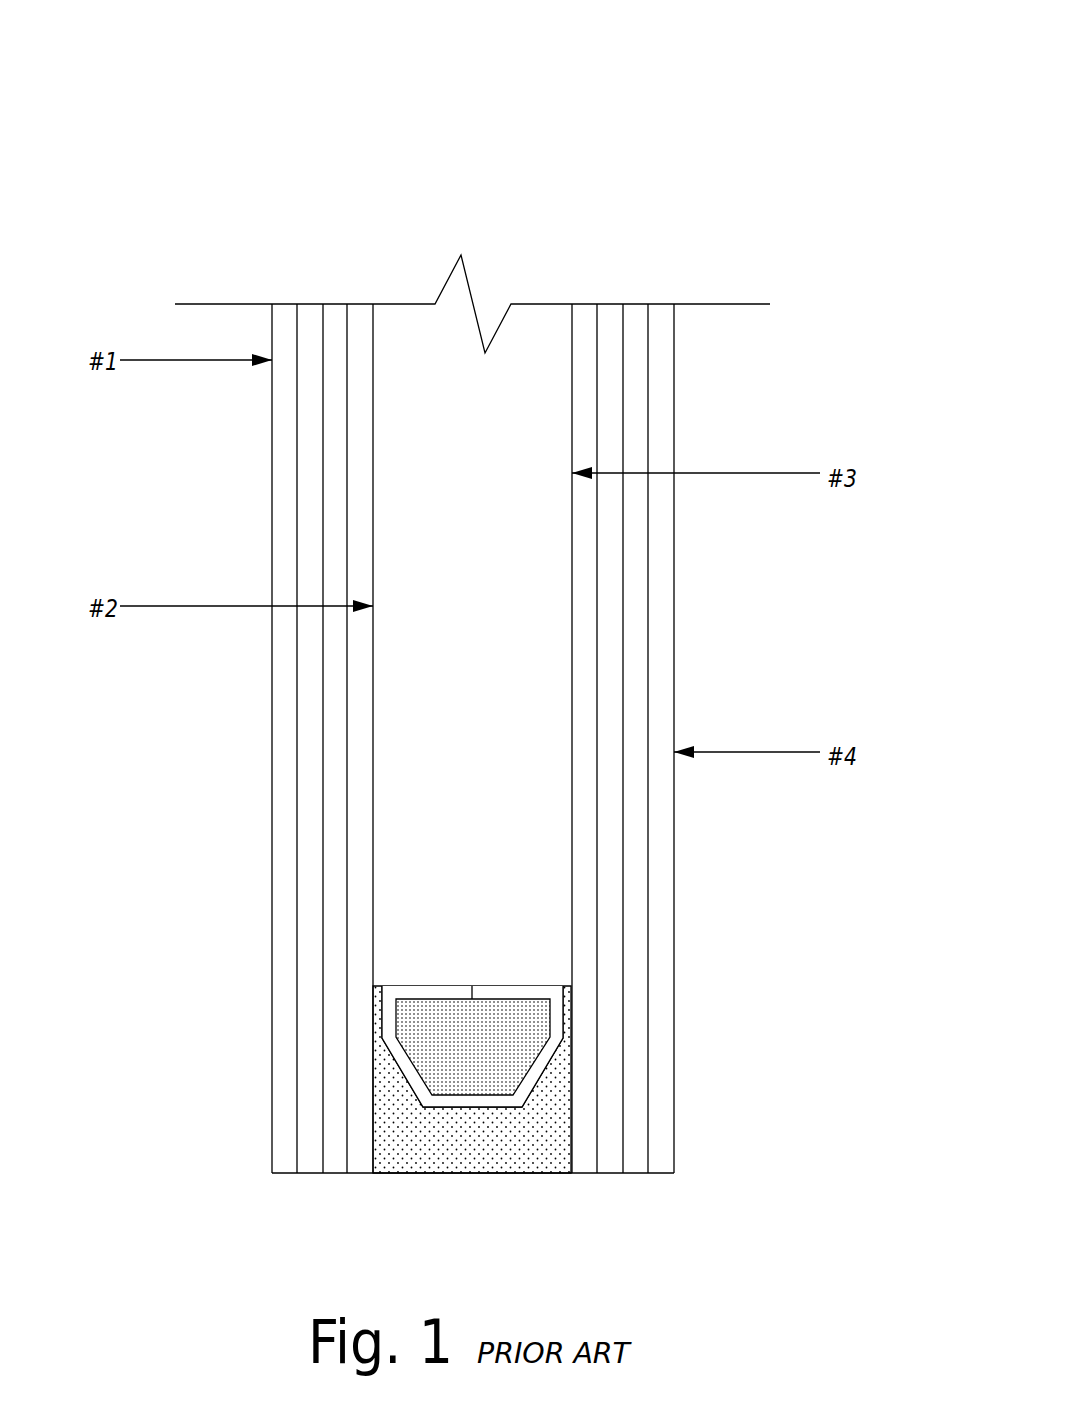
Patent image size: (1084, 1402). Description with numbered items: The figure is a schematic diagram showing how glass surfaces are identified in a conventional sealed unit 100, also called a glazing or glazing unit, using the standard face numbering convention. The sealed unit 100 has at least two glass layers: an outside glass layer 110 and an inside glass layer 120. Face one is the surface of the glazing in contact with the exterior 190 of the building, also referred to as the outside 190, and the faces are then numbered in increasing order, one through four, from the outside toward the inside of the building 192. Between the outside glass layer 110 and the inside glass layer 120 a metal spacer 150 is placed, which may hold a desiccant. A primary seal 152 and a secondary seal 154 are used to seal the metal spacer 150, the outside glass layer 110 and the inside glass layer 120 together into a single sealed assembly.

The sealed unit 100 is at (400, 195).
The outside glass layer 110 is at (338, 368).
The inside glass layer 120 is at (620, 330).
The metal spacer 150 is at (497, 986).
The primary seal 152 is at (573, 1028).
The secondary seal 154 is at (522, 1177).
The exterior 190 is at (122, 809).
The inside of the building 192 is at (932, 823).